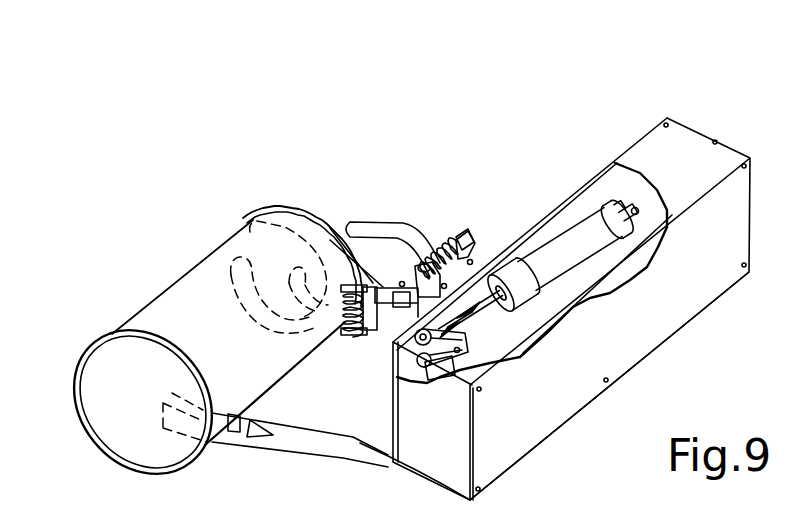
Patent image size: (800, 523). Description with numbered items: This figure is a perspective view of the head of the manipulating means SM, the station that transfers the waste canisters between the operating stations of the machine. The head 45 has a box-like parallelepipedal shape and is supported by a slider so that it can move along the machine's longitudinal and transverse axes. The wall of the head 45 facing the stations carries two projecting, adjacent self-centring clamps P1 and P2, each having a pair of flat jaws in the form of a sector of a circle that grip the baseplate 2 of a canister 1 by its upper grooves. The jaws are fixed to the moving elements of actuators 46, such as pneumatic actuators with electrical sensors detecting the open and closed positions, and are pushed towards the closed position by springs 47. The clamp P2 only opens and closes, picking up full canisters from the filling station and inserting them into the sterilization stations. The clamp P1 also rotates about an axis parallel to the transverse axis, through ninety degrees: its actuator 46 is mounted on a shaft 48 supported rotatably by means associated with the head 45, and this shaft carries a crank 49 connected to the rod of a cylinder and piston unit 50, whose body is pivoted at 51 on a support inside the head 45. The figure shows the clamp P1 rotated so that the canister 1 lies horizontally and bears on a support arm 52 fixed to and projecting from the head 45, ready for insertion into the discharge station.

The manipulating means SM is at (578, 137).
The canister 1 is at (161, 286).
The baseplate 2 is at (302, 206).
The clamp P1 is at (371, 258).
The clamp P2 is at (468, 221).
The head 45 is at (566, 431).
The actuator 46 is at (486, 237).
The spring 47 is at (440, 228).
The shaft 48 is at (440, 353).
The crank 49 is at (444, 368).
The cylinder and piston unit 50 is at (579, 265).
The pivot 51 is at (640, 212).
The support arm 52 is at (285, 440).